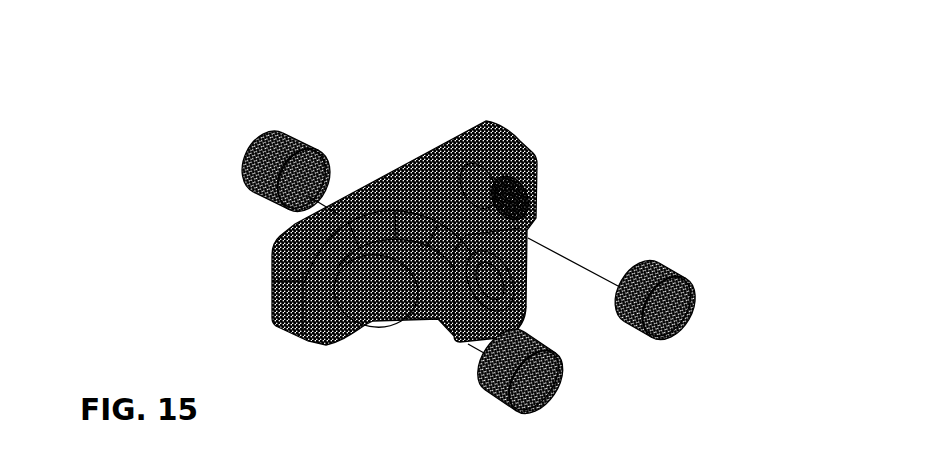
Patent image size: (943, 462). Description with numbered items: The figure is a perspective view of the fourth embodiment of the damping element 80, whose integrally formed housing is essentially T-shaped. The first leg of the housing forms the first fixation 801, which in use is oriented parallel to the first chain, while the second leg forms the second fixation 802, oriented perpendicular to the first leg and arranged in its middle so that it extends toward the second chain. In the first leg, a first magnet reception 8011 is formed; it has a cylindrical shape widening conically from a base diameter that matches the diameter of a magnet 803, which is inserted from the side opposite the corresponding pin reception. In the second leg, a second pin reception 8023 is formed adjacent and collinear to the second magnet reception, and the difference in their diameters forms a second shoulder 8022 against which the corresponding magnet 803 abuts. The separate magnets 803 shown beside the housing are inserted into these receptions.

The damping element 80 is at (470, 230).
The first fixation 801 is at (487, 238).
The first magnet reception 8011 is at (370, 313).
The second fixation 802 is at (528, 200).
The second shoulder 8022 is at (520, 242).
The second pin reception 8023 is at (521, 282).
The magnet 803 is at (255, 146).